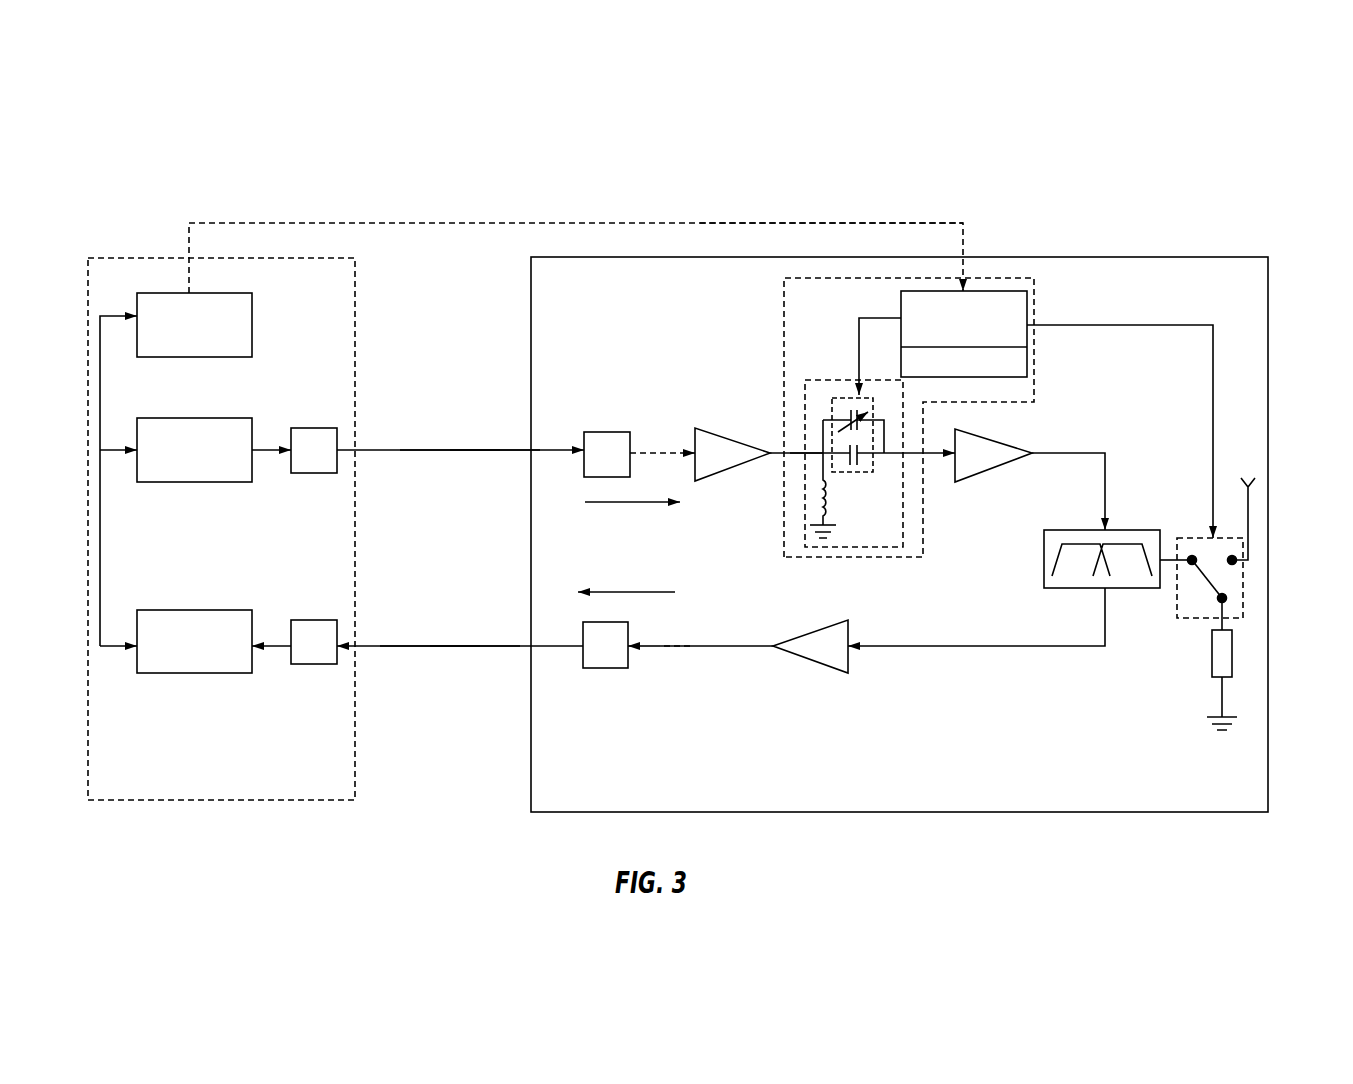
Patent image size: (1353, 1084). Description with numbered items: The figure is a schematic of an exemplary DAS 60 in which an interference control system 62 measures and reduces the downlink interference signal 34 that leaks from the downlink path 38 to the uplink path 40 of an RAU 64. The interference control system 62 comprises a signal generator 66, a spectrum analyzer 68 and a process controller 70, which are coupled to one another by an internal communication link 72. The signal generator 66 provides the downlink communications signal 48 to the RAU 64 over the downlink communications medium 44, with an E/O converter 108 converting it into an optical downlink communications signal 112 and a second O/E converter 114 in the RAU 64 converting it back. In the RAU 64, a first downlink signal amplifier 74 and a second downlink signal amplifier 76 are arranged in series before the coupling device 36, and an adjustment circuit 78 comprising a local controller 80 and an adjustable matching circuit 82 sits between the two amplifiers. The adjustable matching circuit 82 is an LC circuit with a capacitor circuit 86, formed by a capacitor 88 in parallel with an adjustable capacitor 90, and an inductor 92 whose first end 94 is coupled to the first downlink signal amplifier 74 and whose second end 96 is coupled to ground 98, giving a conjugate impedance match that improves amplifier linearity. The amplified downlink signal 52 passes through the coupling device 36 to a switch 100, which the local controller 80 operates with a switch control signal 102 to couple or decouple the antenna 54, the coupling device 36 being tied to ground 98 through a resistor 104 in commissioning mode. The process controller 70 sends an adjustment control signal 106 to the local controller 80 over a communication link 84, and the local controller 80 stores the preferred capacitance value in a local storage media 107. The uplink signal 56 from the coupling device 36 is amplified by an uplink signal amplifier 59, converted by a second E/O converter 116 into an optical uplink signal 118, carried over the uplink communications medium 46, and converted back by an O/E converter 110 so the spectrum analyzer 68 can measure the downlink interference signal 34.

The DAS 60 is at (1328, 158).
The interference control system 62 is at (120, 258).
The RAU 64 is at (1200, 257).
The signal generator 66 is at (214, 418).
The spectrum analyzer 68 is at (152, 610).
The process controller 70 is at (143, 357).
The internal communication link 72 is at (100, 515).
The first downlink signal amplifier 74 is at (732, 438).
The second downlink signal amplifier 76 is at (995, 440).
The adjustment circuit 78 is at (1035, 295).
The local controller 80 is at (977, 290).
The adjustable matching circuit 82 is at (820, 380).
The communication link 84 is at (628, 222).
The capacitor circuit 86 is at (843, 473).
The capacitor 88 is at (863, 435).
The adjustable capacitor 90 is at (843, 417).
The inductor 92 is at (832, 495).
The first end 94 is at (822, 456).
The second end 96 is at (821, 518).
The ground 98 is at (832, 528).
The switch 100 is at (1245, 590).
The switch control signal 102 is at (1170, 327).
The resistor 104 is at (1233, 655).
The adjustment control signal 106 is at (857, 222).
The local storage media 107 is at (1030, 357).
The electrical-to-optical (E/O) converter 108 is at (321, 428).
The optical-to-electrical (O/E) converter 110 is at (316, 664).
The optical downlink communications signal 112 is at (455, 456).
The second O/E converter 114 is at (598, 431).
The second E/O converter 116 is at (614, 668).
The optical uplink signal 118 is at (418, 642).
The downlink interference signal 34 is at (268, 650).
The coupling device 36 is at (1128, 530).
The downlink path 38 is at (608, 503).
The uplink path 40 is at (660, 591).
The downlink communications medium 44 is at (418, 450).
The uplink communications medium 46 is at (392, 647).
The downlink communications signal 48 is at (265, 445).
The downlink signal 52 is at (778, 460).
The antenna 54 is at (1255, 485).
The uplink signal 56 is at (263, 644).
The uplink signal amplifier 59 is at (818, 665).